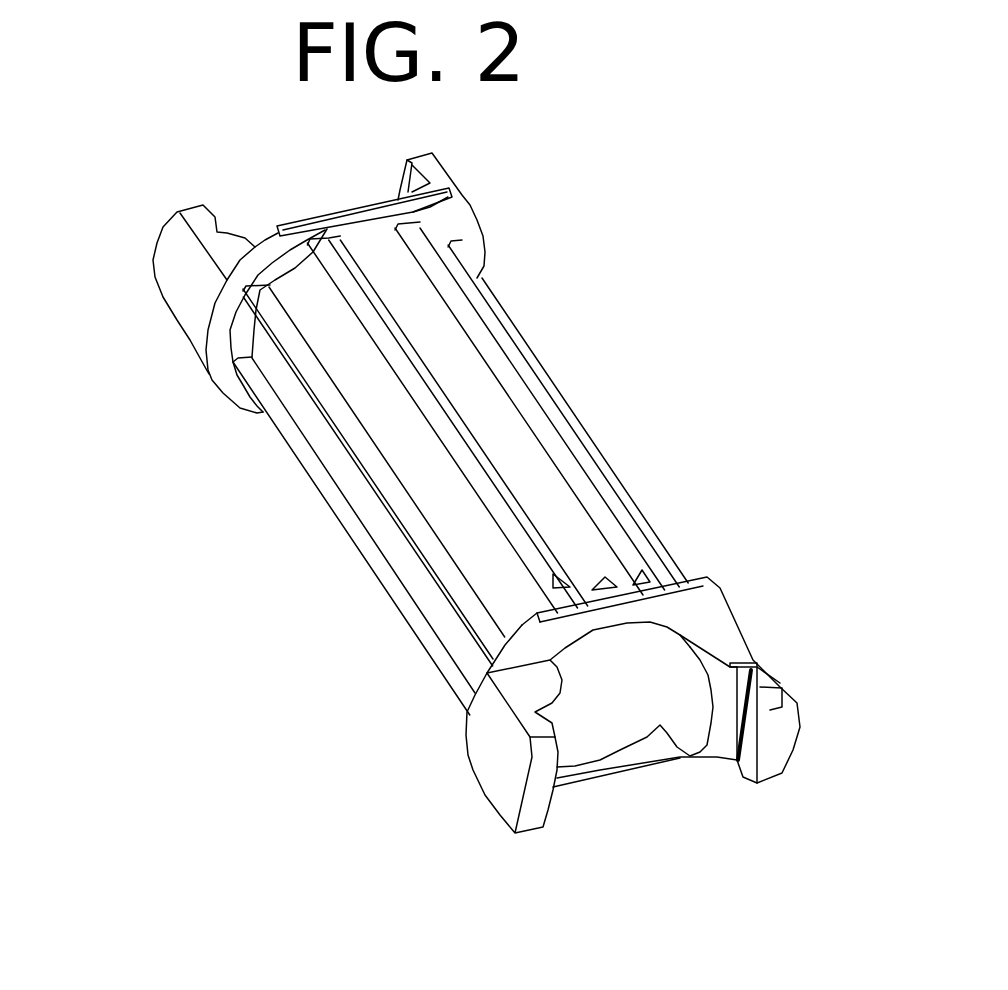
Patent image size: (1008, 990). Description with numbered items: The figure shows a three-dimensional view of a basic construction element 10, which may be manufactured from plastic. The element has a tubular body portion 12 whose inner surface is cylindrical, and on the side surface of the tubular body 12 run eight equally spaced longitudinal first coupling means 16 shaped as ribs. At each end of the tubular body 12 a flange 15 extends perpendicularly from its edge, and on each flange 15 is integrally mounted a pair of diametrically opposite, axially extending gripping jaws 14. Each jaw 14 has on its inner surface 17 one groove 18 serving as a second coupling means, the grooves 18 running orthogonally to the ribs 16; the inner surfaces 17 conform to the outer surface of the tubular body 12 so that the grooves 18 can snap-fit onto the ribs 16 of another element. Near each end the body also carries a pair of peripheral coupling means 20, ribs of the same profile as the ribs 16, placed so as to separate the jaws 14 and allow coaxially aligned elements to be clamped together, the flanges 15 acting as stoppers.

The basic construction element 10 is at (545, 313).
The tubular body portion 12 is at (412, 283).
The gripping jaws 14 is at (175, 280).
The flange 15 is at (713, 608).
The first coupling means 16 is at (525, 395).
The inner surface 17 is at (706, 742).
The groove 18 is at (757, 680).
The peripheral coupling means 20 is at (567, 586).